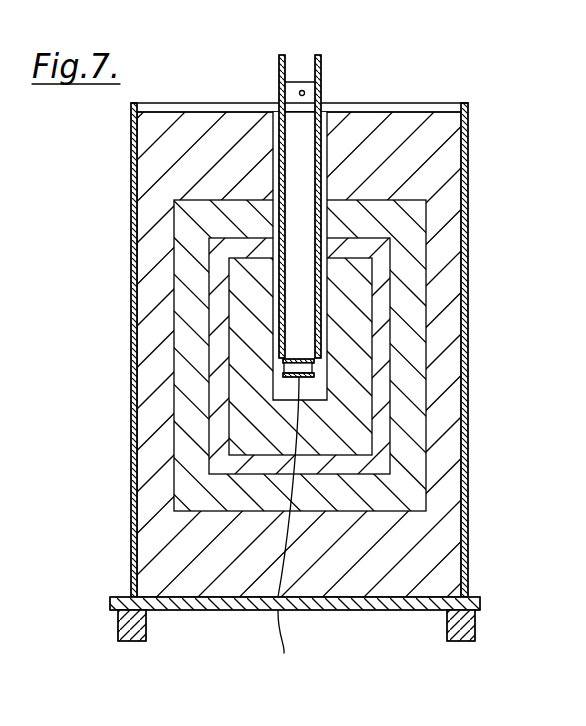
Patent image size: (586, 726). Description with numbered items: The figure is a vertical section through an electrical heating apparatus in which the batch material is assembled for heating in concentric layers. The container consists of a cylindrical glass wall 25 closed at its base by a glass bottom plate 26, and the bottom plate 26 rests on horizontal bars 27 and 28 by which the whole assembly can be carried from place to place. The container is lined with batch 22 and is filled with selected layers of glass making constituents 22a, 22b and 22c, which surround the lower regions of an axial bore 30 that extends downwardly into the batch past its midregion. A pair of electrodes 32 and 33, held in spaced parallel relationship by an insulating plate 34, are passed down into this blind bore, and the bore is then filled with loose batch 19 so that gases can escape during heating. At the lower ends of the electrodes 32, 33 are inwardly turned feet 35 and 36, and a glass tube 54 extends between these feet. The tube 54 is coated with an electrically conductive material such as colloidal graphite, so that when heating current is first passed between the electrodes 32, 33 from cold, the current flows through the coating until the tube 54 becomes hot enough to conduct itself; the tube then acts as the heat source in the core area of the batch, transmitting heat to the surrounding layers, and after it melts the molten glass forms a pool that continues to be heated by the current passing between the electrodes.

The loose batch 19 is at (298, 140).
The batch 22 is at (178, 138).
The layer of glass making constituents 22a is at (185, 243).
The layer of glass making constituents 22b is at (217, 313).
The layer of glass making constituents 22c is at (240, 367).
The cylindrical glass wall 25 is at (470, 262).
The glass bottom plate 26 is at (228, 606).
The horizontal bar 27 is at (133, 641).
The horizontal bar 28 is at (467, 643).
The axial bore 30 is at (330, 143).
The electrode 32 is at (283, 95).
The electrode 33 is at (322, 60).
The insulating plate 34 is at (299, 90).
The inwardly turned foot 35 is at (278, 370).
The inwardly turned foot 36 is at (322, 370).
The glass tube 54 is at (287, 530).